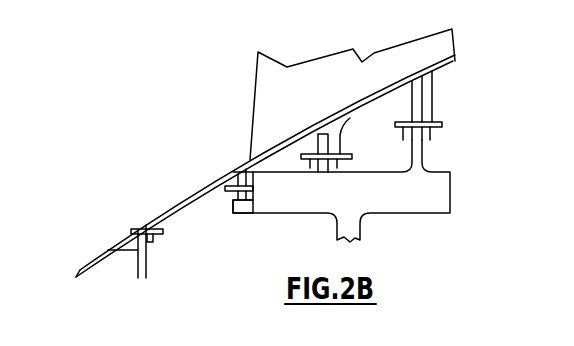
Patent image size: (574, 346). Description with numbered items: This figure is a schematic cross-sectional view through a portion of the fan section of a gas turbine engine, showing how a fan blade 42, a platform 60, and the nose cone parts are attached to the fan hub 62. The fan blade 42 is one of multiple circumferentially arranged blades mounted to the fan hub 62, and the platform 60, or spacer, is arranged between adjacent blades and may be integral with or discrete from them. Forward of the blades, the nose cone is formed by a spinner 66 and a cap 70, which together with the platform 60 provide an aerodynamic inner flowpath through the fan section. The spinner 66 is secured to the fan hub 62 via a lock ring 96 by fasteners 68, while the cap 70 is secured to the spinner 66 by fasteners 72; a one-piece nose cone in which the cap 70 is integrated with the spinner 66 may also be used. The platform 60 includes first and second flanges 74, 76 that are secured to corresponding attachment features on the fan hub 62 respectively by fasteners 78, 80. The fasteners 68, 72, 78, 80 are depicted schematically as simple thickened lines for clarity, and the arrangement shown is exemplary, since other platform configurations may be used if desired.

The fan blade 42 is at (377, 63).
The platform 60 is at (328, 123).
The fan hub 62 is at (390, 203).
The spinner 66 is at (186, 199).
The fastener 68 is at (225, 192).
The cap 70 is at (93, 262).
The fastener 72 is at (153, 242).
The first flange 74 is at (310, 169).
The second flange 76 is at (404, 140).
The fastener 78 is at (348, 152).
The fastener 80 is at (442, 121).
The lock ring 96 is at (247, 213).